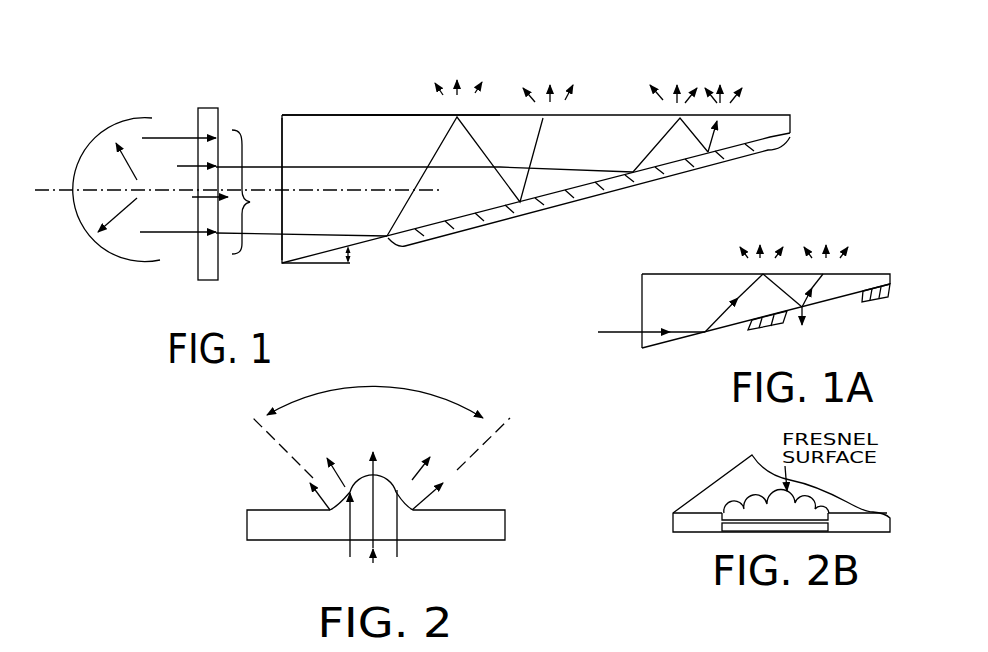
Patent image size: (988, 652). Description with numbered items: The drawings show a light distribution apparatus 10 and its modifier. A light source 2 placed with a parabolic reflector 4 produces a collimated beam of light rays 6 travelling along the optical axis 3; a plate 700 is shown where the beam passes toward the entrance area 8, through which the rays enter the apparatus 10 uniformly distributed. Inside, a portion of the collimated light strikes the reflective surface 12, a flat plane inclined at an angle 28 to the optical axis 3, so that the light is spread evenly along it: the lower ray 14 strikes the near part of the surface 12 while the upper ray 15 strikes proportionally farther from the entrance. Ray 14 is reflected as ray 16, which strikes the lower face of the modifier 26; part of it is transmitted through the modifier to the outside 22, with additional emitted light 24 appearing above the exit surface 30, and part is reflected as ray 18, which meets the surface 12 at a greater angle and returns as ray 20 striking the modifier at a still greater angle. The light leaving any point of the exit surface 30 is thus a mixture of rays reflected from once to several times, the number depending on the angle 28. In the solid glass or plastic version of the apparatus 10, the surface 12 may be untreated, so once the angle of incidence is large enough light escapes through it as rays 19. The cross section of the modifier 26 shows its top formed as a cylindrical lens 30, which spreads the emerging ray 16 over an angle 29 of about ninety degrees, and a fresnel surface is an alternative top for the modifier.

In FIG. 1, the light source 2 is at (157, 190).
In FIG. 1, the optical axis 3 is at (52, 200).
In FIG. 1, the parabolic reflector 4 is at (112, 259).
In FIG. 1, the collimated beam of light rays 6 is at (199, 199).
In FIG. 1, the entrance area 8 is at (281, 130).
In FIG. 1, the distribution apparatus 10 is at (571, 73).
In FIG. 1A, the distribution apparatus 10 is at (776, 246).
In FIG. 1, the reflective surface 12 is at (473, 222).
In FIG. 1A, the reflective surface 12 is at (735, 326).
In FIG. 1, the lower ray 14 is at (303, 236).
In FIG. 1A, the lower ray 14 is at (620, 334).
In FIG. 1, the upper ray 15 is at (362, 172).
In FIG. 1, the reflected ray 16 is at (406, 205).
In FIG. 1A, the reflected ray 16 is at (722, 316).
In FIG. 2, the reflected ray 16 is at (374, 563).
In FIG. 1, the reflected ray 18 is at (508, 188).
In FIG. 1A, the reflected ray 18 is at (783, 300).
In FIG. 1A, the emerging rays 19 is at (806, 314).
In FIG. 1, the reflected ray 20 is at (537, 153).
In FIG. 1A, the reflected ray 20 is at (828, 296).
In FIG. 1, the outside 22 is at (462, 90).
In FIG. 1, the emitted light 24 is at (553, 90).
In FIG. 1, the modifier 26 is at (340, 115).
In FIG. 2, the modifier 26 is at (476, 535).
In FIG. 1, the angle 28 is at (346, 268).
In FIG. 2, the angle 29 is at (418, 384).
In FIG. 1, the exit surface 30 is at (370, 117).
In FIG. 2, the exit surface 30 is at (497, 511).
In FIG. 1, the diffuser plate 700 is at (188, 271).